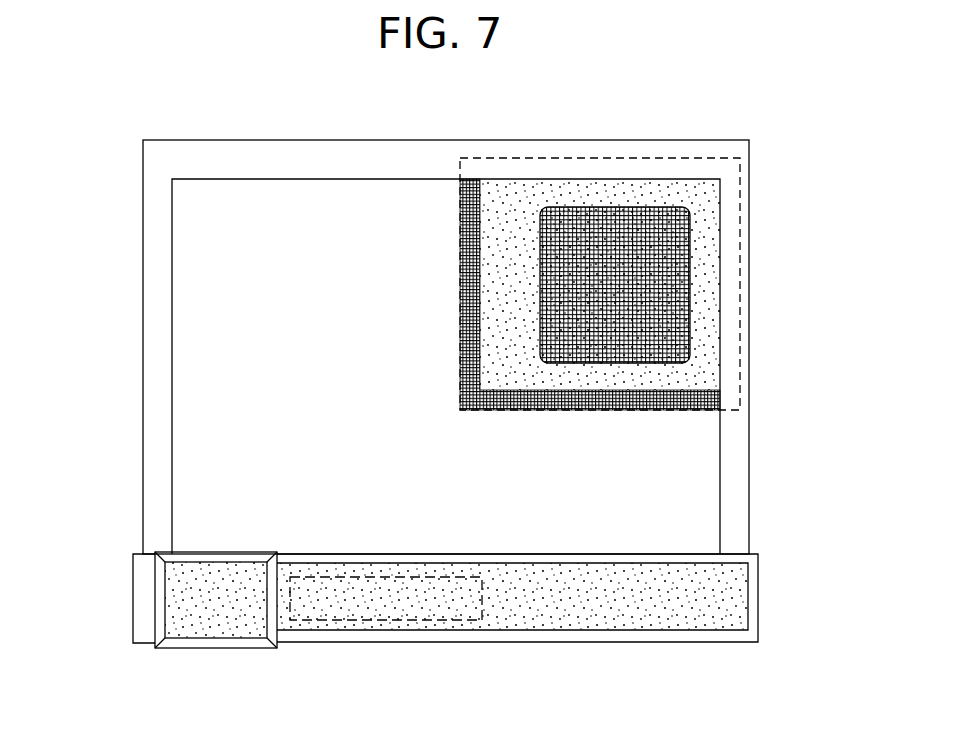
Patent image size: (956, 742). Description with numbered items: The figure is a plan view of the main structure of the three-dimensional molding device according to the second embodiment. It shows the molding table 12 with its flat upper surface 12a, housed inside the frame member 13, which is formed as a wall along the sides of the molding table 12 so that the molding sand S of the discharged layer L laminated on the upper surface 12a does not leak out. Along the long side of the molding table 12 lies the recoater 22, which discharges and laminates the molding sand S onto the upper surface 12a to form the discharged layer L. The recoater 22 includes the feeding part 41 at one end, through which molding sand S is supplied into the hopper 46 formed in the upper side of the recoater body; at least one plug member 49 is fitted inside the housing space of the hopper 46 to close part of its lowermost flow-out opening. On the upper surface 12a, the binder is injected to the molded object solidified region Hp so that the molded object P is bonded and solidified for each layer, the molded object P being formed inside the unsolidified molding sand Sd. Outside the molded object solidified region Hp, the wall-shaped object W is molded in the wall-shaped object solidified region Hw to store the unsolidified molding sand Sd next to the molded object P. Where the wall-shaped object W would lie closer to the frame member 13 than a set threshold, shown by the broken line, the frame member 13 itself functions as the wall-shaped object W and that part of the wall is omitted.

The molding table 12 is at (236, 290).
The frame member 13 is at (157, 350).
The upper surface 12a is at (350, 381).
The wall-shaped object W is at (603, 172).
The wall-shaped object solidified region Hw is at (610, 400).
The unsolidified molding sand Sd is at (513, 237).
The molded object P is at (685, 285).
The molded object solidified region Hp is at (654, 323).
The discharged layer L is at (517, 371).
The recoater 22 is at (517, 635).
The molding sand S is at (580, 612).
The plug member 49 is at (340, 598).
The hopper 46 is at (510, 600).
The feeding part 41 is at (215, 643).